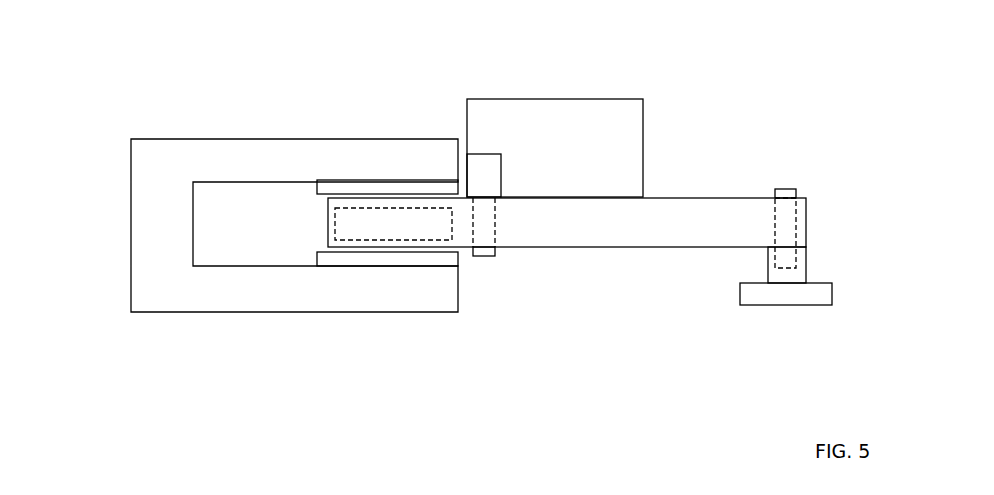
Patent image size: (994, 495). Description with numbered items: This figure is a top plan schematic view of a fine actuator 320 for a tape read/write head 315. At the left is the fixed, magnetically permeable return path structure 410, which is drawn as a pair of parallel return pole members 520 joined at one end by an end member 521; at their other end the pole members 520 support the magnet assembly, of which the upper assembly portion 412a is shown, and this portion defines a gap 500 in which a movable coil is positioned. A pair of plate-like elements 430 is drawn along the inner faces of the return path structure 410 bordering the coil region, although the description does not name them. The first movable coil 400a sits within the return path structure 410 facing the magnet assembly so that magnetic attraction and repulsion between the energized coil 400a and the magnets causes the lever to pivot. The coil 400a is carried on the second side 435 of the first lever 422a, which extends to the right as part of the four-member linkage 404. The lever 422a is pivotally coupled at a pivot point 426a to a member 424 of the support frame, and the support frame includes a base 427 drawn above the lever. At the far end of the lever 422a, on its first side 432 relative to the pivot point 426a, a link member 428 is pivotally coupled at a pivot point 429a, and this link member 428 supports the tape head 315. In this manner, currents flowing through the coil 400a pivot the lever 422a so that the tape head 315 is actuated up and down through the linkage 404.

The fine actuator 320 is at (116, 127).
The return path structure 410 is at (190, 139).
The return pole members 520 is at (268, 139).
The end member 521 is at (148, 233).
The guide plate 430 is at (318, 192).
The upper assembly portion 412a is at (351, 179).
The linkage 404 is at (587, 248).
The first movable coil 400a is at (385, 230).
The gap 500 is at (355, 208).
The second side 435 is at (463, 208).
The pivot point 426a is at (484, 256).
The member 424 is at (498, 158).
The base 427 is at (632, 108).
The first lever 422a is at (672, 196).
The first side 432 is at (727, 213).
The pivot point 429a is at (784, 186).
The link member 428 is at (806, 275).
The tape read/write head 315 is at (768, 305).